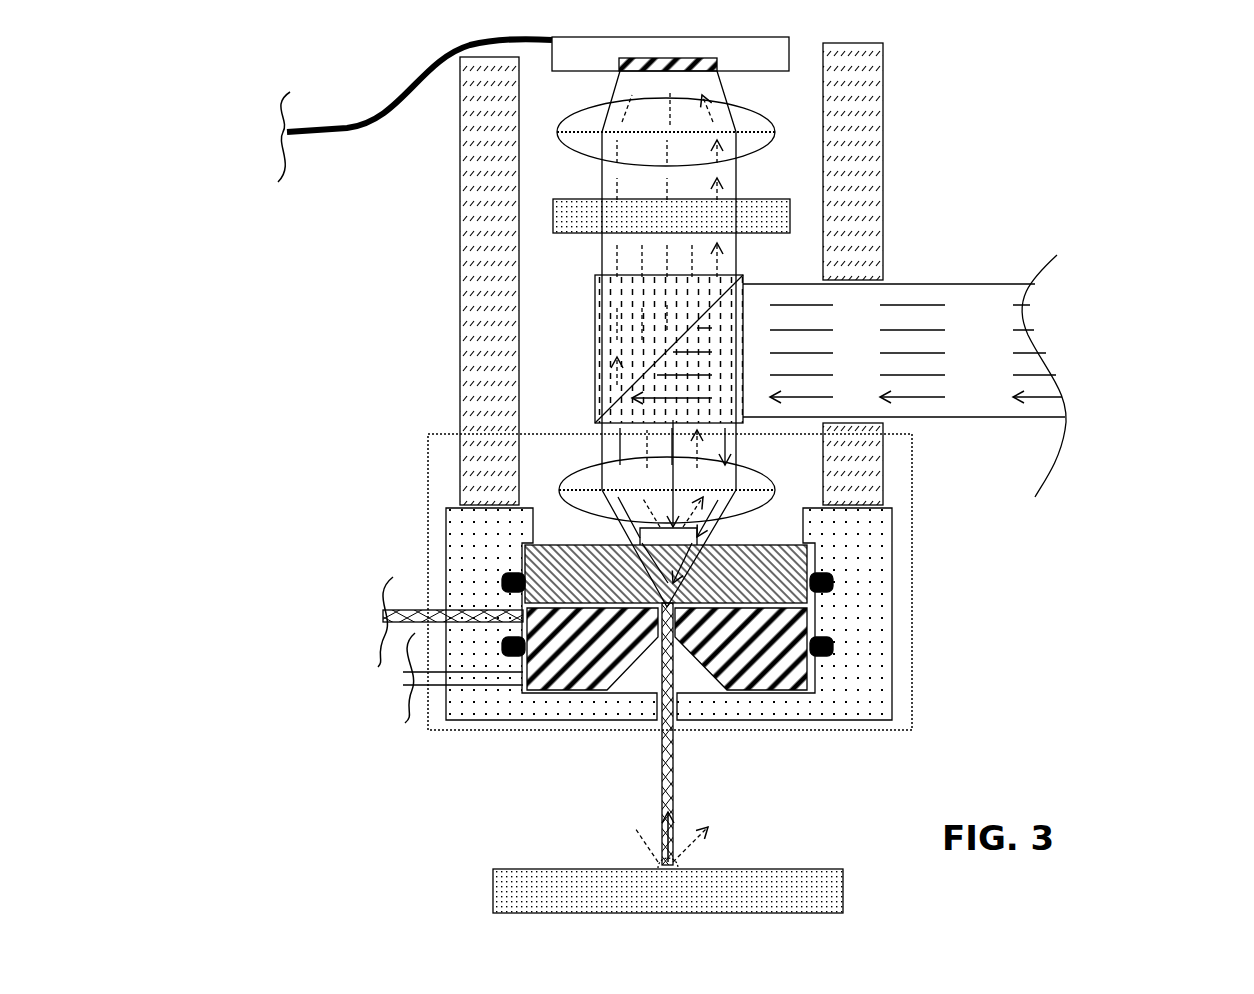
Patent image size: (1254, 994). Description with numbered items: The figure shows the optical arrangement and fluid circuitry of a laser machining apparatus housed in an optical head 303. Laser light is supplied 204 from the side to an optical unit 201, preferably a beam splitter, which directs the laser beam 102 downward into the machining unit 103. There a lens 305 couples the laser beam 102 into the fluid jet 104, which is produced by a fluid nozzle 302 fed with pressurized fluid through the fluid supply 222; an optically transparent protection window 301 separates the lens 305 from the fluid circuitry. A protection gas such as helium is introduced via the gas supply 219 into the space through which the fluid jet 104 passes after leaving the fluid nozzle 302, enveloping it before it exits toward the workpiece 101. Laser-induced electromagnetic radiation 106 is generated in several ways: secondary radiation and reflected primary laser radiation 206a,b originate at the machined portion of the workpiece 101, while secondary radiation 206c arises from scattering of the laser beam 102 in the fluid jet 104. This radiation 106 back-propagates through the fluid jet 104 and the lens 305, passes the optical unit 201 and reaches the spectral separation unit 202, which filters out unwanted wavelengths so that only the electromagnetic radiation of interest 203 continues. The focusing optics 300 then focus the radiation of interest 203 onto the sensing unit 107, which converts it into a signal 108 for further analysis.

The workpiece 101 is at (493, 900).
The laser beam 102 is at (738, 452).
The machining unit 103 is at (912, 658).
The fluid jet 104 is at (677, 766).
The laser-induced electromagnetic radiation 106 is at (602, 256).
The sensing unit 107 is at (789, 58).
The signal 108 is at (277, 128).
The optical unit 201 is at (743, 278).
The spectral separation unit 202 is at (790, 218).
The electromagnetic radiation of interest 203 is at (736, 165).
The laser light supply 204 is at (1067, 417).
The secondary radiation and reflected primary laser radiation 206a,b is at (658, 858).
The secondary radiation 206c is at (653, 818).
The gas supply 219 is at (403, 680).
The fluid supply 222 is at (383, 618).
The focusing optics 300 is at (775, 130).
The protection window 301 is at (815, 560).
The fluid nozzle 302 is at (815, 615).
The optical head 303 is at (460, 330).
The lens 305 is at (775, 488).